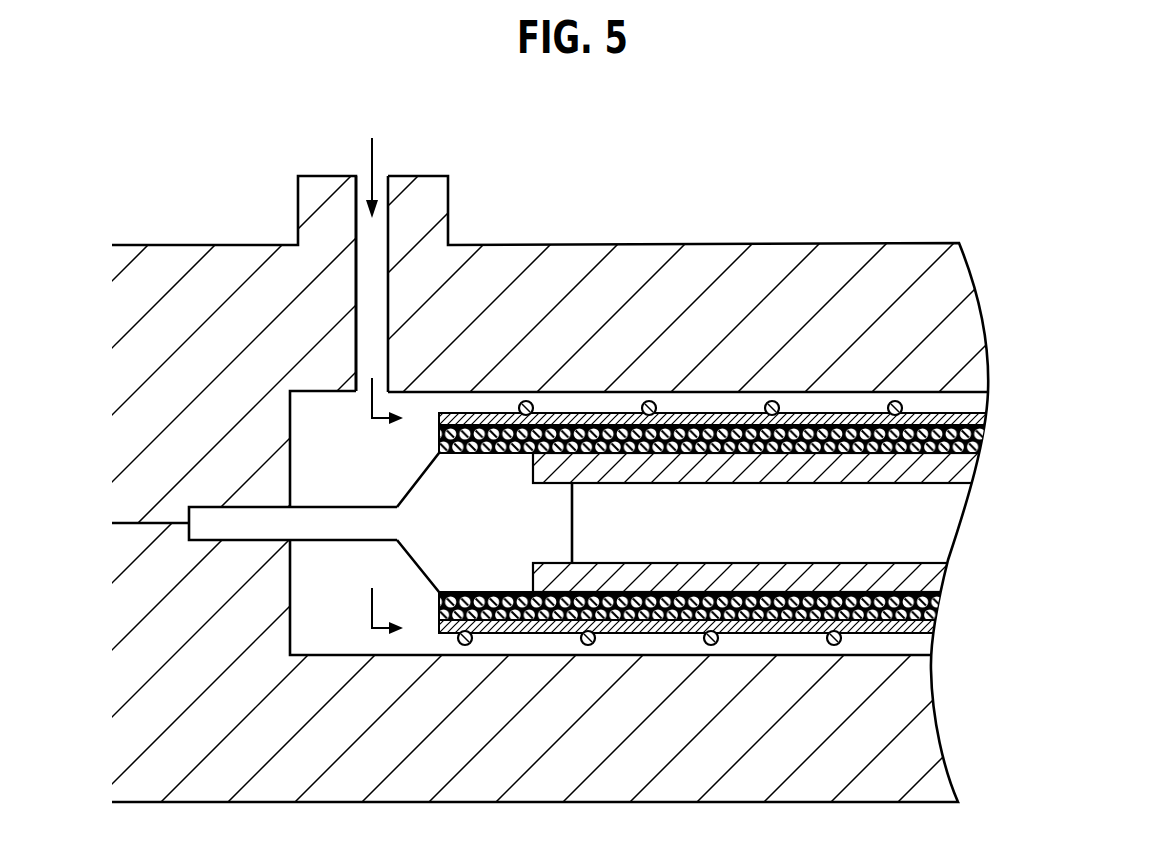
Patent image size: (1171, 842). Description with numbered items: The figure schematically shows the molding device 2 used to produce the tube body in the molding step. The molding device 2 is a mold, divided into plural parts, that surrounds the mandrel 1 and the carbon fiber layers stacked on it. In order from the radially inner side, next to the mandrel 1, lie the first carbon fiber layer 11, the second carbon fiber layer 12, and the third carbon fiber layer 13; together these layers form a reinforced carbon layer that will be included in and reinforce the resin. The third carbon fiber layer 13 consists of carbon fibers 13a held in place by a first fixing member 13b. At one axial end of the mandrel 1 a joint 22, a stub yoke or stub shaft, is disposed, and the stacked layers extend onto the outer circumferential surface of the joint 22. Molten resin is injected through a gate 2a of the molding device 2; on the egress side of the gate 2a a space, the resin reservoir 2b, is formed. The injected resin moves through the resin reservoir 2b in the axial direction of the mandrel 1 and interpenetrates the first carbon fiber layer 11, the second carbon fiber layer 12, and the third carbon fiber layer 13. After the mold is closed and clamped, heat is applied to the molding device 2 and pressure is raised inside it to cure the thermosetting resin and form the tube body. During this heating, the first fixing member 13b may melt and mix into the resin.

The mandrel 1 is at (808, 522).
The molding device 2 is at (844, 158).
The gate 2a is at (392, 187).
The resin reservoir 2b is at (366, 474).
The first carbon fiber layer 11 is at (982, 444).
The second carbon fiber layer 12 is at (982, 434).
The third carbon fiber layer 13 is at (801, 522).
The carbon fibers 13a is at (982, 420).
The first fixing member 13b is at (902, 401).
The joint 22 is at (343, 532).